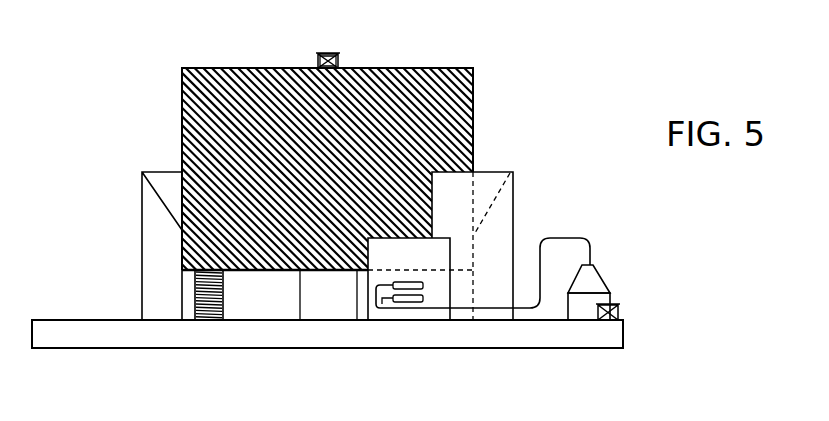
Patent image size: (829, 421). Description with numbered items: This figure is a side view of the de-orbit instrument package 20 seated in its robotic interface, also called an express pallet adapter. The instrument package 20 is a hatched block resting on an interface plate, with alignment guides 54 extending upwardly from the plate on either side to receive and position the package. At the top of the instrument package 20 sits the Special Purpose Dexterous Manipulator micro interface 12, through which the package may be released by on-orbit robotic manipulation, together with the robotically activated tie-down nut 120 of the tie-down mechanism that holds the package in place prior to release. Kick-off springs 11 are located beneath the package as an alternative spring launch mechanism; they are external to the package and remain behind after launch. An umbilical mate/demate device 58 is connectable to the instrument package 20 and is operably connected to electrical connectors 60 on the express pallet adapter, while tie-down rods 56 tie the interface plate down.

The kick-off springs 11 is at (215, 321).
The Special Purpose Dexterous Manipulator micro interface 12 is at (318, 64).
The tie-down nut 120 is at (336, 54).
The instrument package 20 is at (418, 88).
The alignment guides 54 is at (150, 260).
The tie-down rods 56 is at (618, 310).
The umbilical mate/demate device 58 is at (377, 282).
The electrical connectors 60 is at (588, 292).